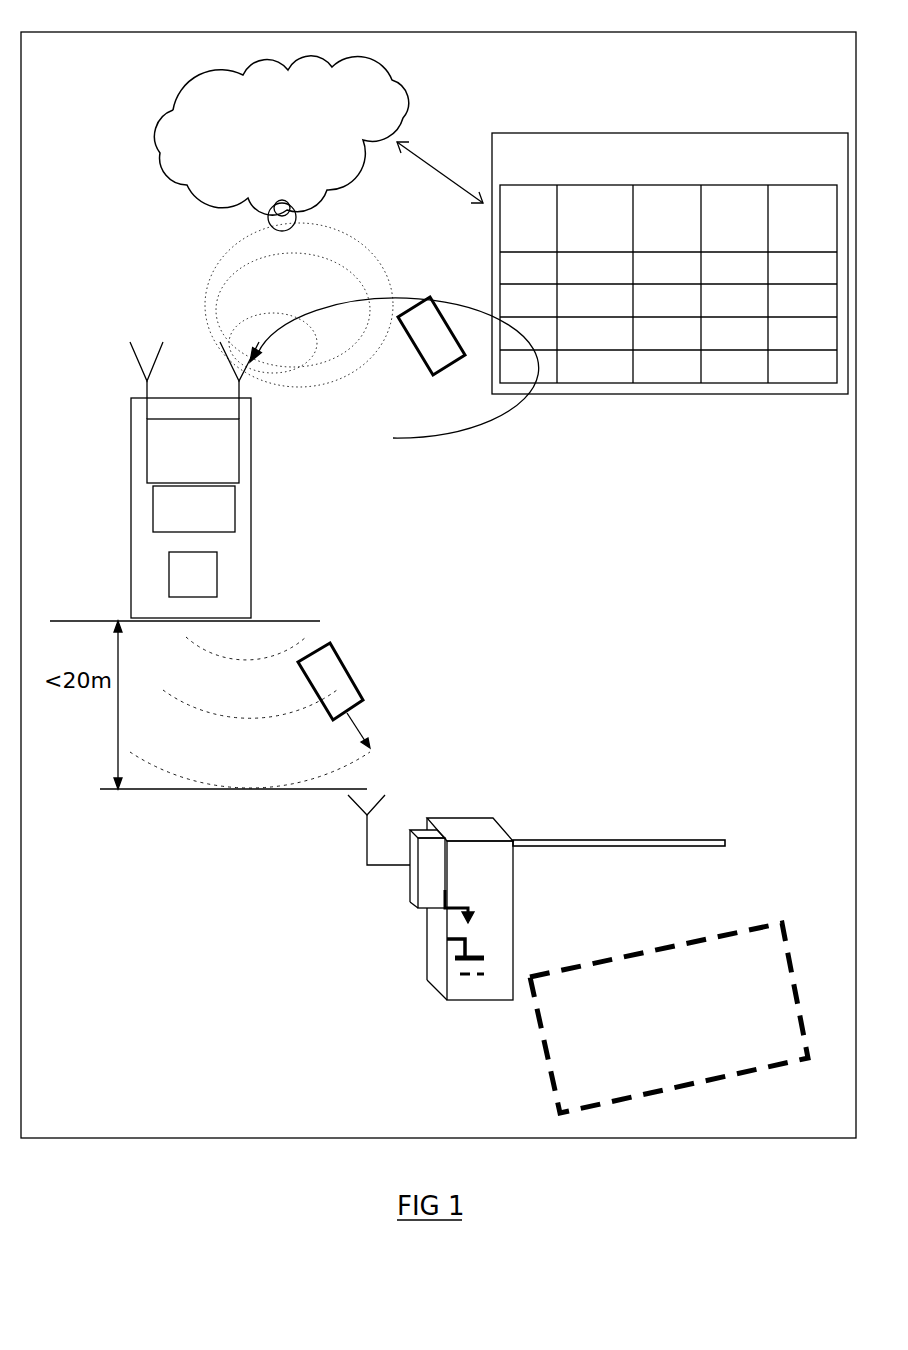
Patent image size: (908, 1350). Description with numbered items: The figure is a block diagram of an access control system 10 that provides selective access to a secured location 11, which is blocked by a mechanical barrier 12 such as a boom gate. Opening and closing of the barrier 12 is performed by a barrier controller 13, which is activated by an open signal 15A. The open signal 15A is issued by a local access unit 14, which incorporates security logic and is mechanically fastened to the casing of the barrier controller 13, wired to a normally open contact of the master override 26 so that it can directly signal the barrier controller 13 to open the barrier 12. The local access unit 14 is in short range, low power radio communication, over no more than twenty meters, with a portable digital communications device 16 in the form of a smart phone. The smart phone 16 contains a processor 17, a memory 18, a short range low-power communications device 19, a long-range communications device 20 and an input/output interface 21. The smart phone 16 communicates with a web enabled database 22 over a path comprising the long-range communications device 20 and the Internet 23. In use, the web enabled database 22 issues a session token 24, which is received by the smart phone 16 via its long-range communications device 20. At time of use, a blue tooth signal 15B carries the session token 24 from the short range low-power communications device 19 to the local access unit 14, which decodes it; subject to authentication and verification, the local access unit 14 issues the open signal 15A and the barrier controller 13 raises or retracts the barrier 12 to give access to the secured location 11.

The access control system 10 is at (152, 32).
The secured location 11 is at (660, 1000).
The mechanical barrier 12 is at (687, 839).
The barrier controller 13 is at (475, 1003).
The local access unit 14 is at (422, 910).
The open signal 15A is at (449, 893).
The blue tooth signal 15B is at (215, 707).
The portable digital communications device 16 is at (155, 407).
The processor 17 is at (235, 508).
The memory 18 is at (217, 575).
The short range low-power communications device 19 is at (140, 363).
The long-range communications device 20 is at (248, 380).
The input/output interface 21 is at (220, 452).
The web enabled database 22 is at (707, 143).
The Internet 23 is at (281, 143).
The session token 24 is at (394, 522).
The master override 26 is at (448, 957).